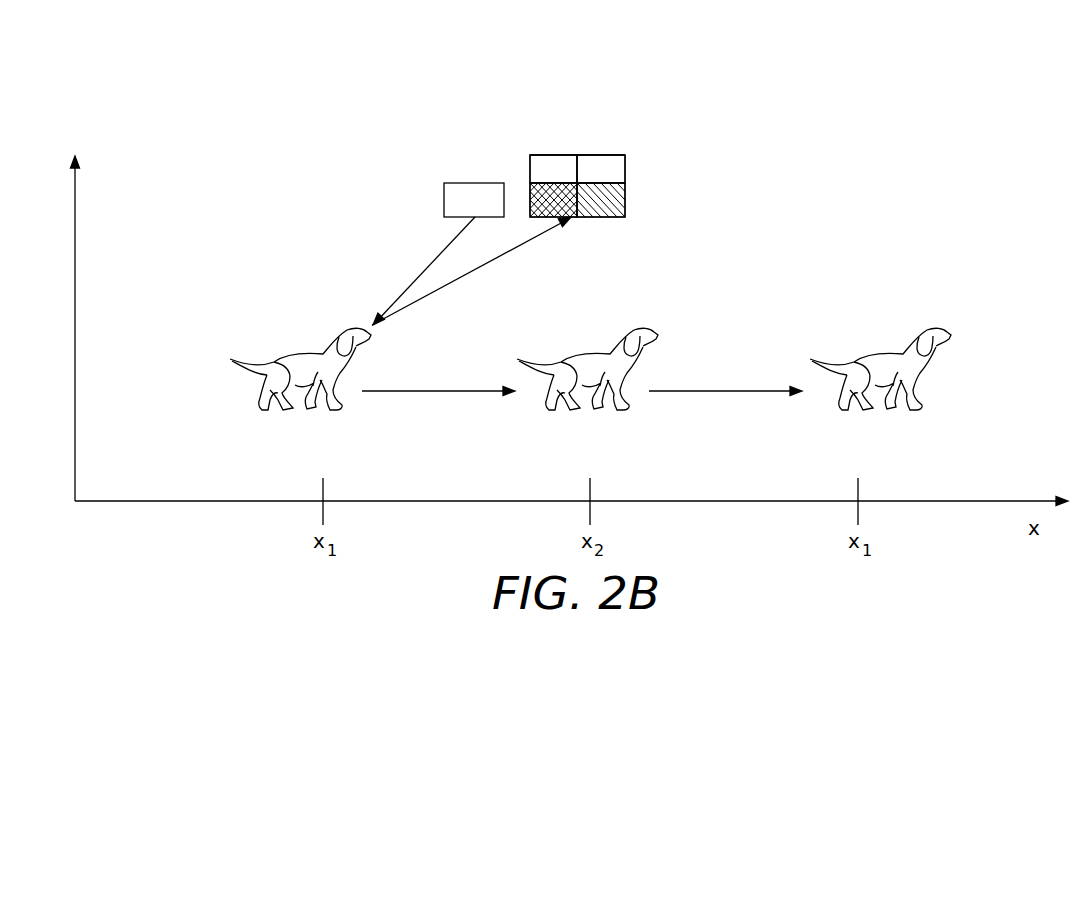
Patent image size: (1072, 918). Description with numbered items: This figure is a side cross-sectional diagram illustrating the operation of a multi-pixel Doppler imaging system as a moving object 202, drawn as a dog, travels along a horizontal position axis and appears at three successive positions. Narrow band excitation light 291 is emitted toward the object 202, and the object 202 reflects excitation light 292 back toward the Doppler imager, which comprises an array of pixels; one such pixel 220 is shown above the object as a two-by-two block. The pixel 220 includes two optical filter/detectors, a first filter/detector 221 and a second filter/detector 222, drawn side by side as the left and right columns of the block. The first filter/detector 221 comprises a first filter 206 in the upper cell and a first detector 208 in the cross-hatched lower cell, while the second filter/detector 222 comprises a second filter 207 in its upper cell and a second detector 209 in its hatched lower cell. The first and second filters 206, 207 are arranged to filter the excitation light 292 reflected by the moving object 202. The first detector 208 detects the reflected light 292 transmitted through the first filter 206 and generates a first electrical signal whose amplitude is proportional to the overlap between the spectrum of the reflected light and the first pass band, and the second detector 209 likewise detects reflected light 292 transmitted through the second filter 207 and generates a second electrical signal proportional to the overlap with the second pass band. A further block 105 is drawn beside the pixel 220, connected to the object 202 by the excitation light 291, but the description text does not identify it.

The camera 105 is at (460, 183).
The object 202 is at (306, 355).
The first filter 206 is at (529, 172).
The second filter 207 is at (625, 172).
The first detector 208 is at (530, 200).
The second detector 209 is at (625, 200).
The pixel 220 is at (642, 74).
The first filter/detector 221 is at (547, 139).
The second filter/detector 222 is at (610, 139).
The narrow band excitation light 291 is at (430, 258).
The reflected excitation light 292 is at (477, 272).